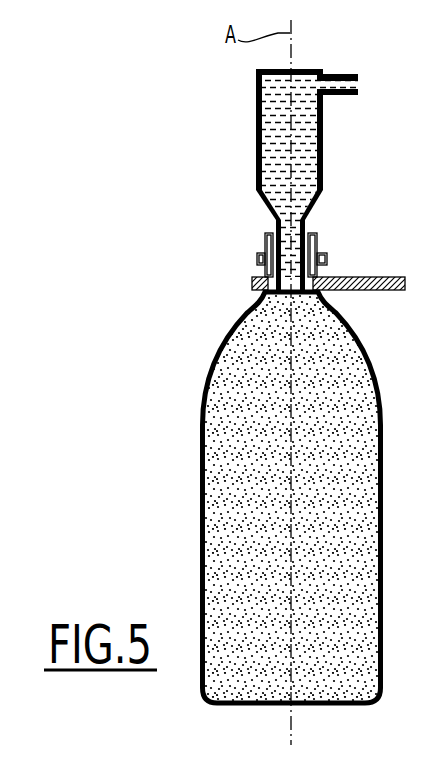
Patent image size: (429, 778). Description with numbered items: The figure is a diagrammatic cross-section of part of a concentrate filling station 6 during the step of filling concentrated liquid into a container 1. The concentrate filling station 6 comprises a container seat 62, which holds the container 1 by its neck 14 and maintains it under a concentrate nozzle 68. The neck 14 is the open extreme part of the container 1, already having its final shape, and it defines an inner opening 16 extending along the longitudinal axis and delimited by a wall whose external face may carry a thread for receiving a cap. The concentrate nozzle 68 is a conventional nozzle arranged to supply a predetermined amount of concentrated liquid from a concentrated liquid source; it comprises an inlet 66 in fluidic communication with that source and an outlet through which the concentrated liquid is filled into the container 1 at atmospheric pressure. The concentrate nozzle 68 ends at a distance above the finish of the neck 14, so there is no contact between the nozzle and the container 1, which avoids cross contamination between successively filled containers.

The container 1 is at (202, 500).
The concentrate filling station 6 is at (300, 167).
The neck 14 is at (265, 244).
The inner opening 16 is at (317, 263).
The container seat 62 is at (367, 290).
The inlet 66 is at (345, 85).
The concentrate nozzle 68 is at (246, 213).